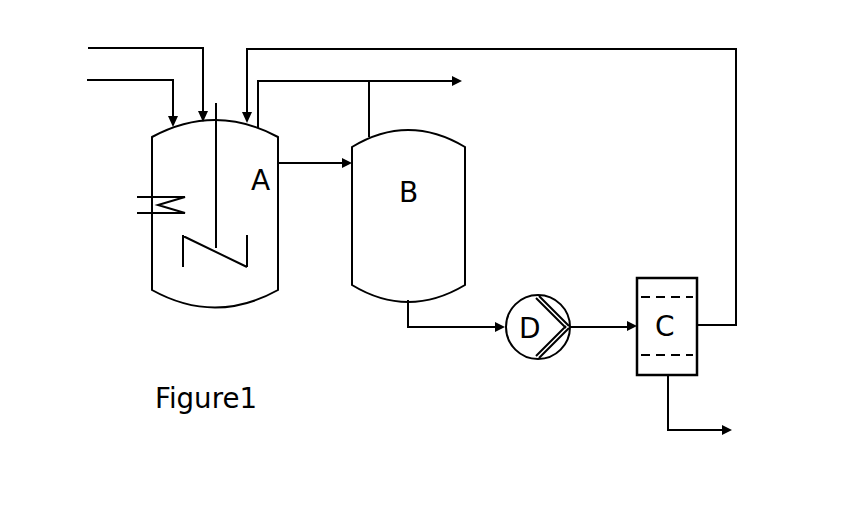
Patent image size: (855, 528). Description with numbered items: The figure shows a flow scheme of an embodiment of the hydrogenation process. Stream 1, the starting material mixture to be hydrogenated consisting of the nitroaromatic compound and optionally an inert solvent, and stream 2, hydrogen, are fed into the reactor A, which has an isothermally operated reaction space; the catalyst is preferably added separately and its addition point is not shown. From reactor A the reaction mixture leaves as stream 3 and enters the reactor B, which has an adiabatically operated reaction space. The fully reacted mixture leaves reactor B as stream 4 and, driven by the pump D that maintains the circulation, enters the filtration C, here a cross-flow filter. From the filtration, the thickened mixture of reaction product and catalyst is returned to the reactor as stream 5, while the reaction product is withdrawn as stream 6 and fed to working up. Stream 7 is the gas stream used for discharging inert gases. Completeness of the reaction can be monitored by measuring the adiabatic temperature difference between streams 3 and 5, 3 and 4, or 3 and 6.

The starting material mixture stream 1 is at (120, 99).
The hydrogen stream 2 is at (132, 76).
The reaction mixture stream 3 is at (315, 147).
The fully reacted mixture stream 4 is at (456, 313).
The thickened mixture stream 5 is at (489, 168).
The reaction product stream 6 is at (720, 412).
The gas stream 7 is at (373, 104).